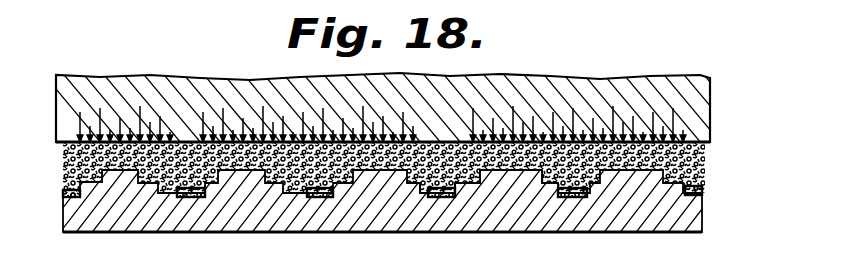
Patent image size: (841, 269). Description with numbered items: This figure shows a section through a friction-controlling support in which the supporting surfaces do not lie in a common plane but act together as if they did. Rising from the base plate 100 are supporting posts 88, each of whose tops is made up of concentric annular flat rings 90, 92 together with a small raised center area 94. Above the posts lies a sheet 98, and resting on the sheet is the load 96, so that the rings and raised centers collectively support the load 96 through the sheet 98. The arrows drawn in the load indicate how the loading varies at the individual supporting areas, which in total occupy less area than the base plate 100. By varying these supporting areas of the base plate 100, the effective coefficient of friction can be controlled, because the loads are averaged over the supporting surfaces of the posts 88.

The supporting posts 88 is at (130, 183).
The concentric annular flat ring 90 is at (488, 180).
The concentric annular flat ring 92 is at (500, 176).
The small raised center area 94 is at (515, 172).
The load 96 is at (568, 93).
The sheet 98 is at (703, 160).
The base plate 100 is at (692, 212).